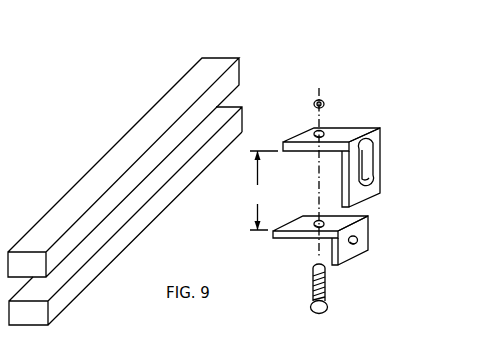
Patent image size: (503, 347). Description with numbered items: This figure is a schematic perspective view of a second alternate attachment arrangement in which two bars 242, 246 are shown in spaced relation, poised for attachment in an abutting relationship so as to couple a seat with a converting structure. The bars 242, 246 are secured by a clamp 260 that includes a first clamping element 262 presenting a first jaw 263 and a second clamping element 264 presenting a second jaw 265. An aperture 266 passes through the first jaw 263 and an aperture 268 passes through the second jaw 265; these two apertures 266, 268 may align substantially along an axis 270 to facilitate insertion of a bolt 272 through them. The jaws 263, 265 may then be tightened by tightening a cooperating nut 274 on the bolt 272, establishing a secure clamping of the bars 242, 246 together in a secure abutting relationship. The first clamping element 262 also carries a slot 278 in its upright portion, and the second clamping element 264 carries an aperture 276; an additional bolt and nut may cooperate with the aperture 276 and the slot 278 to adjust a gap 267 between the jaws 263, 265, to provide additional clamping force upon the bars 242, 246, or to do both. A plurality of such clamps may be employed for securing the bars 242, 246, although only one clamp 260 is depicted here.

The bar 242 is at (212, 58).
The bar 246 is at (238, 107).
The clamp 260 is at (371, 100).
The first clamping element 262 is at (332, 161).
The first jaw 263 is at (294, 140).
The second clamping element 264 is at (308, 259).
The second jaw 265 is at (273, 232).
The aperture 266 is at (323, 133).
The gap 267 is at (262, 190).
The aperture 268 is at (316, 230).
The axis 270 is at (320, 89).
The bolt 272 is at (312, 306).
The nut 274 is at (314, 102).
The aperture 276 is at (357, 245).
The slot 278 is at (371, 186).